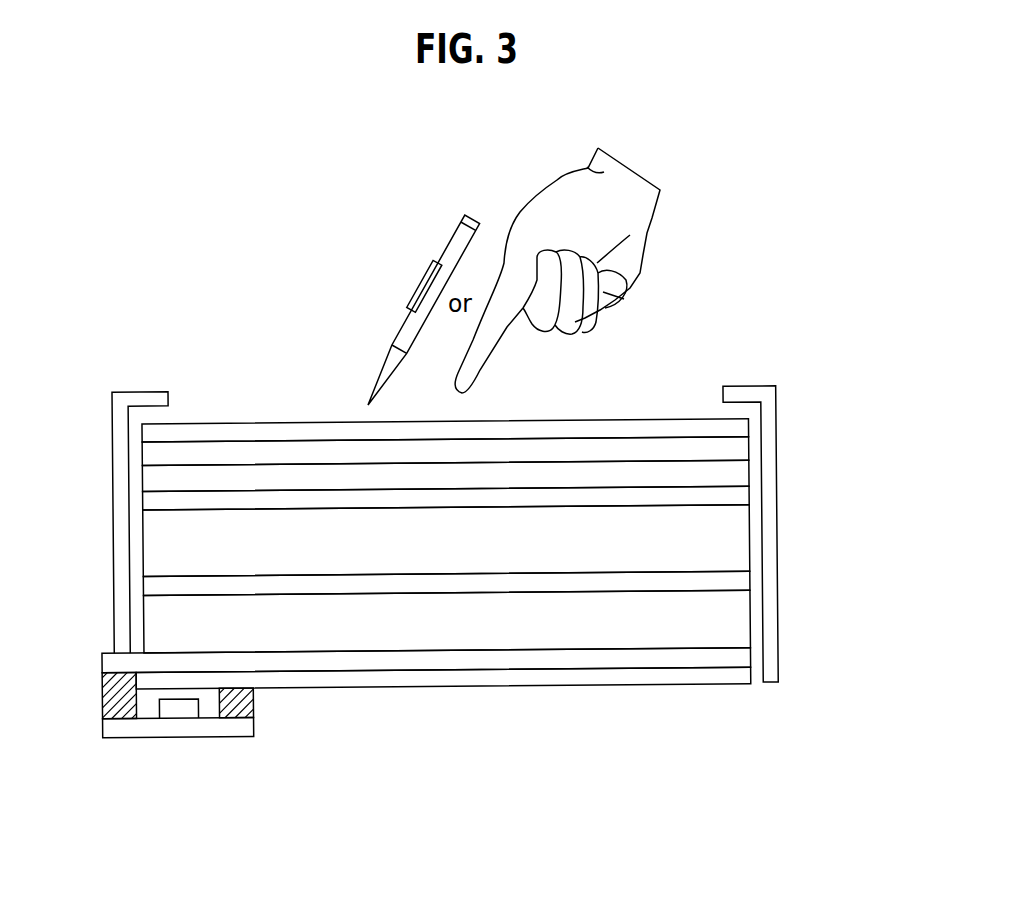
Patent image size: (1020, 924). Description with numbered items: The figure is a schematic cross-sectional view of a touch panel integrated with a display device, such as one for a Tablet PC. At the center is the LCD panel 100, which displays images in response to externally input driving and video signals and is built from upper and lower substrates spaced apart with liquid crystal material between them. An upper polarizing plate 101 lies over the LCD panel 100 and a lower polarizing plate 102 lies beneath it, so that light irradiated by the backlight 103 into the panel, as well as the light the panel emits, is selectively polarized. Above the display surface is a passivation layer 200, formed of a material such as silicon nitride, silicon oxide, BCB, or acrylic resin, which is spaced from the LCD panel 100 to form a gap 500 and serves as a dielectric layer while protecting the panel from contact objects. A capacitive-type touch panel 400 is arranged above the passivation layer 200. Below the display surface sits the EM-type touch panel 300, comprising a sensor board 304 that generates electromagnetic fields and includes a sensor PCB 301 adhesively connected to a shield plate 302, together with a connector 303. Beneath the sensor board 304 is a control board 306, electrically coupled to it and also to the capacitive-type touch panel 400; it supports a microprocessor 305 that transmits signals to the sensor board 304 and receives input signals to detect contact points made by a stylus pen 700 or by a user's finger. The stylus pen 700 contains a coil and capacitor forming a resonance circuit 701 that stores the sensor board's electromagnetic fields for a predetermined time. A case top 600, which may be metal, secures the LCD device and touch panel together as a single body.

The LCD panel 100 is at (737, 550).
The upper polarizing plate 101 is at (738, 497).
The lower polarizing plate 102 is at (739, 583).
The backlight 103 is at (737, 623).
The passivation layer 200 is at (740, 450).
The EM-type touch panel 300 is at (471, 717).
The sensor PCB 301 is at (733, 660).
The shield plate 302 is at (733, 675).
The connector 303 is at (120, 717).
The sensor board 304 is at (503, 684).
The microprocessor 305 is at (175, 708).
The control board 306 is at (230, 728).
The capacitive-type touch panel 400 is at (662, 425).
The gap 500 is at (737, 473).
The case top 600 is at (118, 513).
The stylus pen 700 is at (472, 217).
The resonance circuit 701 is at (422, 288).